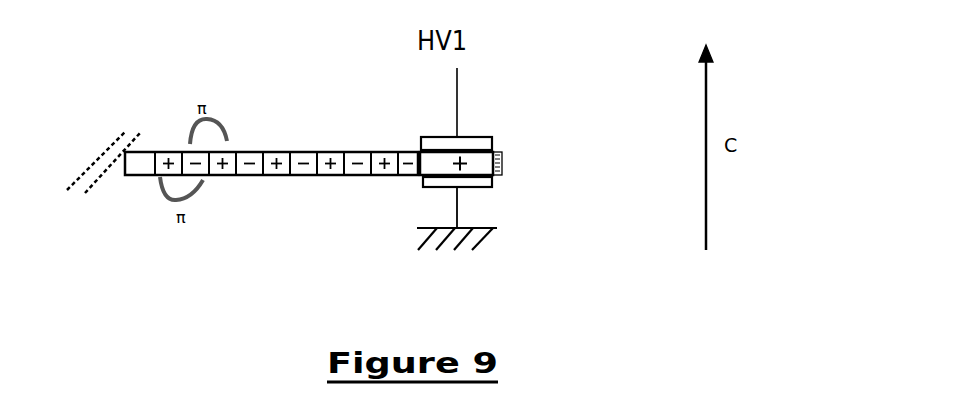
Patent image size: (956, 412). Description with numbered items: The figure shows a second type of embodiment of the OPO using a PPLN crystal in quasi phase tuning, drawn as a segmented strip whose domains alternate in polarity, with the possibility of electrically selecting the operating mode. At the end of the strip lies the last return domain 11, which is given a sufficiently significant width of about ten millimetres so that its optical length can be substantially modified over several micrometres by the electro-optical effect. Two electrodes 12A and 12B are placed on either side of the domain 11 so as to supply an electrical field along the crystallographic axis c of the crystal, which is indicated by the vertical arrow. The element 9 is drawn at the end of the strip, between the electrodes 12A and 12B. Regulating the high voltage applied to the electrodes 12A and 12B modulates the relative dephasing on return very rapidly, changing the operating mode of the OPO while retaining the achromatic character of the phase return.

The cell / capacitor element with hatched end 9 is at (502, 158).
The last return domain 11 is at (418, 176).
The electrode 12A is at (492, 138).
The electrode 12B is at (492, 188).